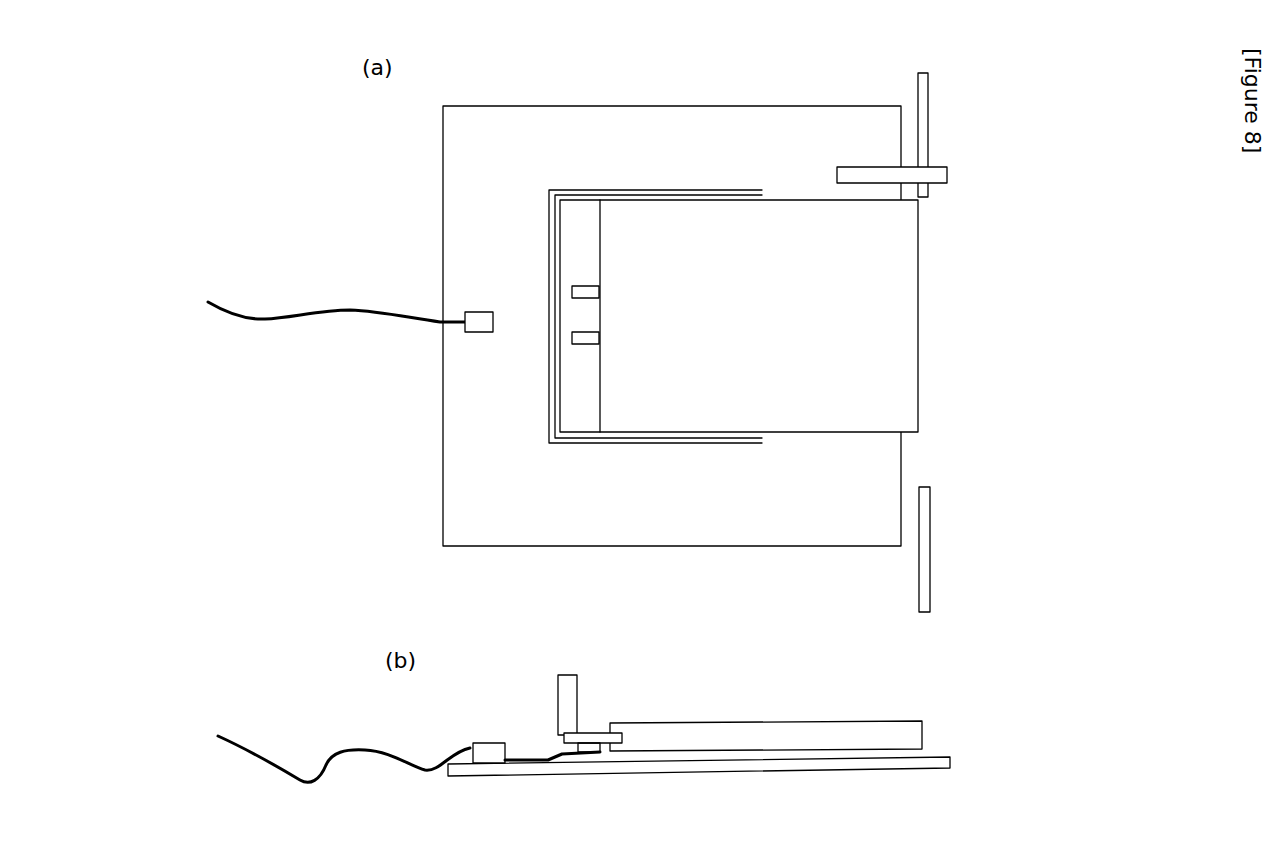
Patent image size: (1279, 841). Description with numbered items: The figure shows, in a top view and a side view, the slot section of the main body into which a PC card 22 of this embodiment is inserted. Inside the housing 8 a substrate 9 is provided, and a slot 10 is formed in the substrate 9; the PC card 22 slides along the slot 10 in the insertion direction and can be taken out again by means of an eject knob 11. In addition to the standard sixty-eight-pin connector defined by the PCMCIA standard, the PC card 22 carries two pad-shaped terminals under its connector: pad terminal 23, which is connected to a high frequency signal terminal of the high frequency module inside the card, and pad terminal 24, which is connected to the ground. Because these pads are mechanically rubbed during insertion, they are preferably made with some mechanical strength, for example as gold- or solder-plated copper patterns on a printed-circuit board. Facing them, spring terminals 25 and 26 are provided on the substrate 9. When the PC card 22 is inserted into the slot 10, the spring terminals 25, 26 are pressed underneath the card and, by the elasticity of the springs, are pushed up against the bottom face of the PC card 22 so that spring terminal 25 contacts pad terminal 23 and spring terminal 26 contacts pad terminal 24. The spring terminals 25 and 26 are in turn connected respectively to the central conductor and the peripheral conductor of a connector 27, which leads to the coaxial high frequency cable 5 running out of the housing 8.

In FIG. 8A, the high frequency cable 5 is at (333, 310).
In FIG. 8B, the high frequency cable 5 is at (272, 768).
In FIG. 8A, the housing 8 is at (930, 132).
In FIG. 8A, the substrate 9 is at (677, 125).
In FIG. 8B, the substrate 9 is at (945, 768).
In FIG. 8A, the slot 10 is at (712, 190).
In FIG. 8A, the eject knob 11 is at (933, 176).
In FIG. 8A, the PC card 22 is at (905, 312).
In FIG. 8B, the PC card 22 is at (905, 728).
In FIG. 8A, the pad terminal 23 is at (585, 344).
In FIG. 8B, the pad terminal 23 is at (600, 737).
In FIG. 8A, the pad terminal 24 is at (583, 286).
In FIG. 8B, the pad terminal 24 is at (614, 697).
In FIG. 8A, the spring terminal 25 is at (535, 386).
In FIG. 8B, the spring terminal 25 is at (555, 757).
In FIG. 8A, the spring terminal 26 is at (535, 247).
In FIG. 8B, the spring terminal 26 is at (533, 700).
In FIG. 8A, the connector 27 is at (477, 311).
In FIG. 8B, the connector 27 is at (487, 748).